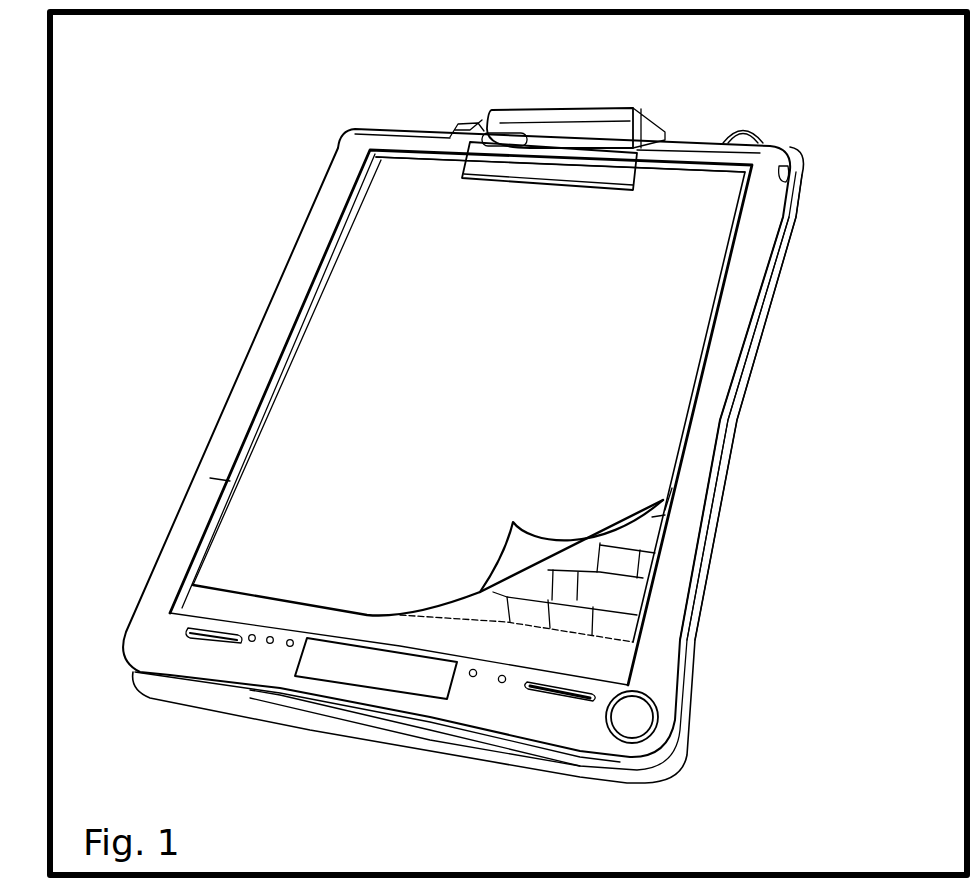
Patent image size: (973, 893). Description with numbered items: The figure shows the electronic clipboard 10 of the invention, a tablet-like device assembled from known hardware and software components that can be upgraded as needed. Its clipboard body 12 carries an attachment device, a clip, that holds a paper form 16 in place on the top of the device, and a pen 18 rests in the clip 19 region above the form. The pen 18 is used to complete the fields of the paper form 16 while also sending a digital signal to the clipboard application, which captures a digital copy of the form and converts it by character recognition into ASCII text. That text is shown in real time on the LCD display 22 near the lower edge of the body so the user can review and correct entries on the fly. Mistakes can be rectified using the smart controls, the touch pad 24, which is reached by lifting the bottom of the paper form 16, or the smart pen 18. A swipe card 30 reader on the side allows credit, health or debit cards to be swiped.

The electronic clipboard 10 is at (807, 245).
The clipboard body 12 is at (648, 683).
The paper form 16 is at (590, 413).
The pen 18 is at (610, 123).
The clip 19 is at (613, 157).
The display 22 is at (393, 668).
The touch pad 24 is at (613, 562).
The swipe card 30 is at (762, 207).